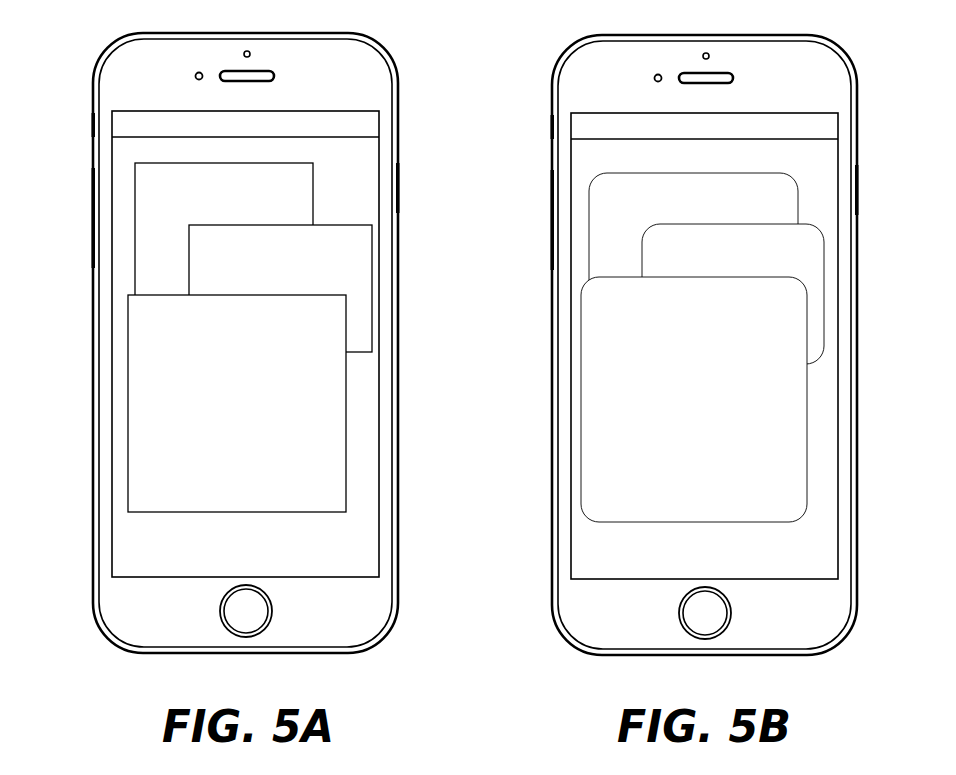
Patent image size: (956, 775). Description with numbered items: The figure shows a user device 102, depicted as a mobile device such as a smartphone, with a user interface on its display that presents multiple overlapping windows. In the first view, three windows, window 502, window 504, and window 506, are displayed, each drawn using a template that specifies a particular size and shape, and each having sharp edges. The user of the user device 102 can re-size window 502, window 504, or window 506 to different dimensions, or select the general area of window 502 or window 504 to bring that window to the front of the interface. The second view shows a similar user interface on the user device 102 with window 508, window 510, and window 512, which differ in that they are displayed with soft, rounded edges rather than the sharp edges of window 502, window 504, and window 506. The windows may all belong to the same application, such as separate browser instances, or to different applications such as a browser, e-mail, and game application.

In FIG. 5A, the user device 102 is at (225, 20).
In FIG. 5B, the user device 102 is at (684, 20).
In FIG. 5A, the window 502 is at (134, 240).
In FIG. 5A, the window 504 is at (373, 288).
In FIG. 5A, the window 506 is at (127, 401).
In FIG. 5B, the window 508 is at (588, 242).
In FIG. 5B, the window 510 is at (825, 294).
In FIG. 5B, the window 512 is at (580, 397).